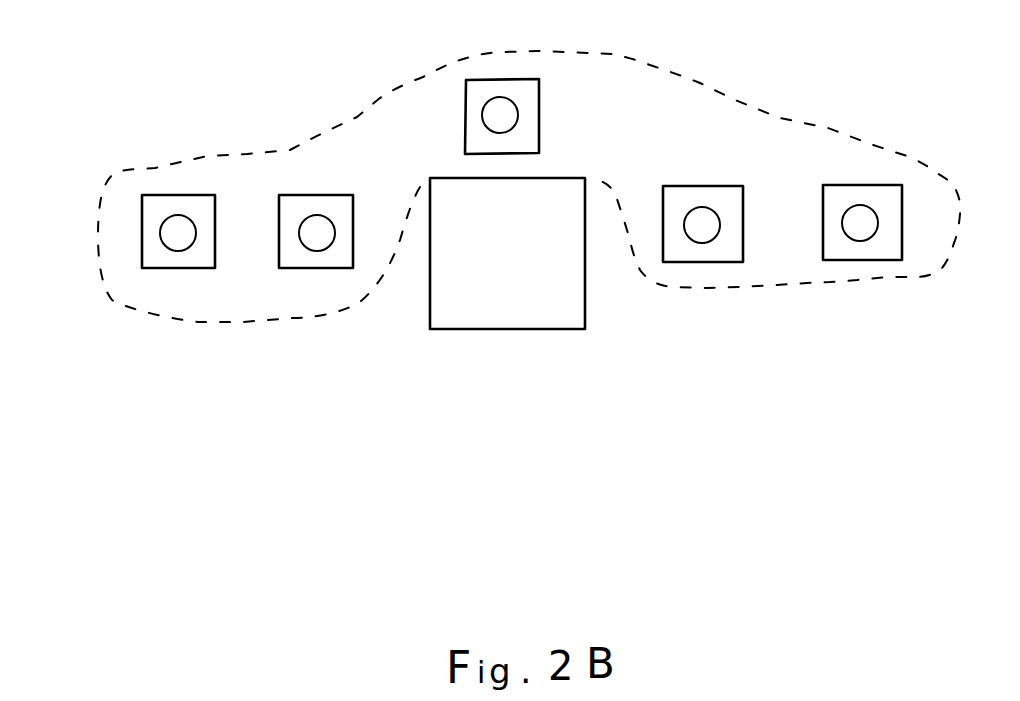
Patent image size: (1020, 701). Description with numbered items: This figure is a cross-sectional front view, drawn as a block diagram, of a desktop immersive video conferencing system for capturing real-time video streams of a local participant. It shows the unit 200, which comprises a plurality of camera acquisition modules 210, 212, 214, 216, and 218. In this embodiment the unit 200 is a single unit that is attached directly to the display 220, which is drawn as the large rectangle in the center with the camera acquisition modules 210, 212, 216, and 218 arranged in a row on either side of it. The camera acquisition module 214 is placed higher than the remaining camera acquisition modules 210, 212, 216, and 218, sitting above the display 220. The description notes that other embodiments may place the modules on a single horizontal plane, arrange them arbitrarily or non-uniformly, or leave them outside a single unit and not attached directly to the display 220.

The unit 200 is at (680, 90).
The camera acquisition module 210 is at (172, 268).
The camera acquisition module 212 is at (316, 274).
The camera acquisition module 214 is at (465, 102).
The camera acquisition module 216 is at (712, 266).
The camera acquisition module 218 is at (867, 263).
The display 220 is at (540, 313).